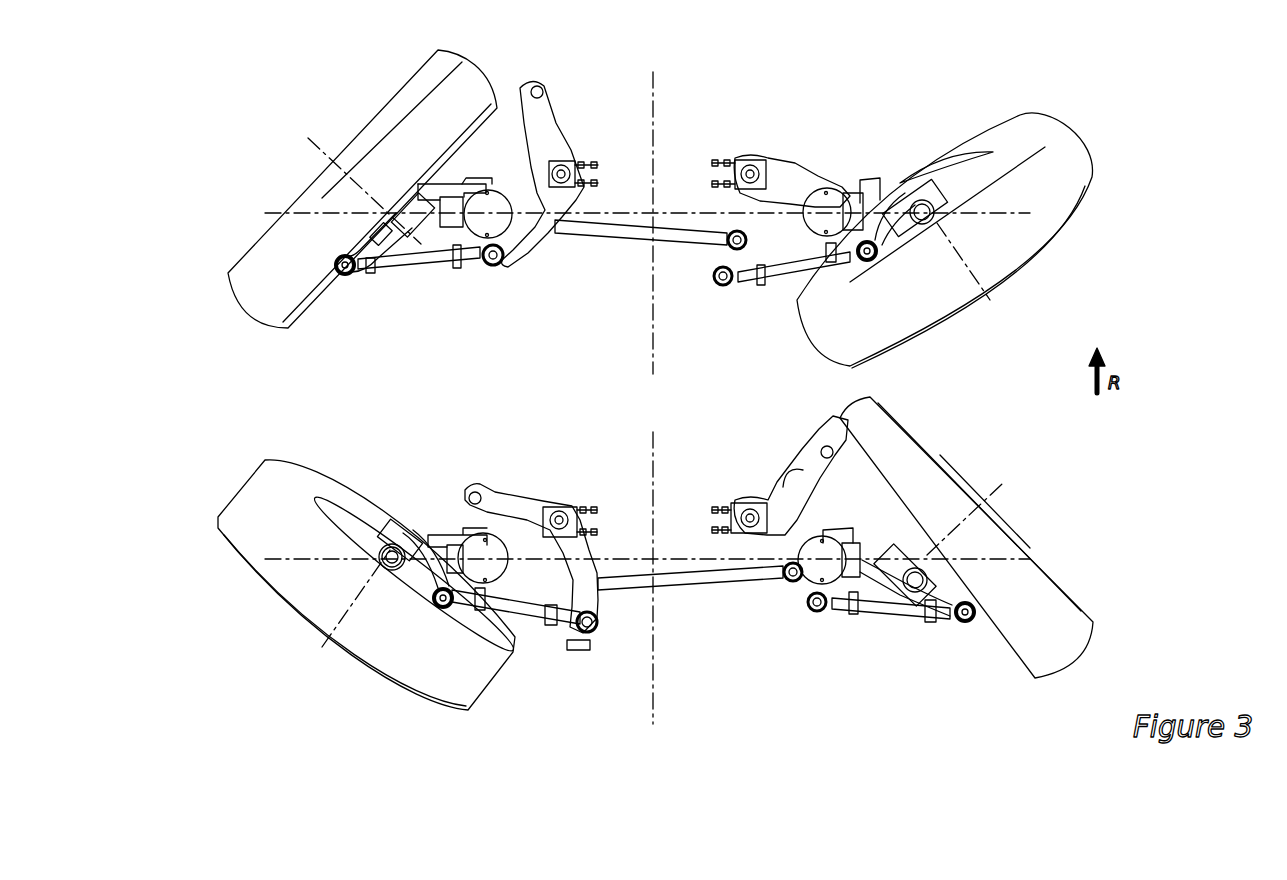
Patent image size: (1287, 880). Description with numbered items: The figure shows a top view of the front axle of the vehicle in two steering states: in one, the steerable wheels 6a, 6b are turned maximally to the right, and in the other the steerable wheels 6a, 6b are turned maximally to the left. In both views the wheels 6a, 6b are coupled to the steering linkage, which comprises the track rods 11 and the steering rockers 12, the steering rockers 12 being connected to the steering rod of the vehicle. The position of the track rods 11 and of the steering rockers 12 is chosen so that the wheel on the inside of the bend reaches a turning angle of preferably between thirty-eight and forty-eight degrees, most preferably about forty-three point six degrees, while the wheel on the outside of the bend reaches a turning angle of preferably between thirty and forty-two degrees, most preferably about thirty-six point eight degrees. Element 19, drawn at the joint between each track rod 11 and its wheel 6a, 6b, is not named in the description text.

The steerable wheel 6a is at (268, 293).
The steerable wheel 6b is at (1070, 152).
The track rod 11 is at (420, 260).
The steering rocker 12 is at (548, 123).
The steering knuckle arm 19 is at (368, 270).